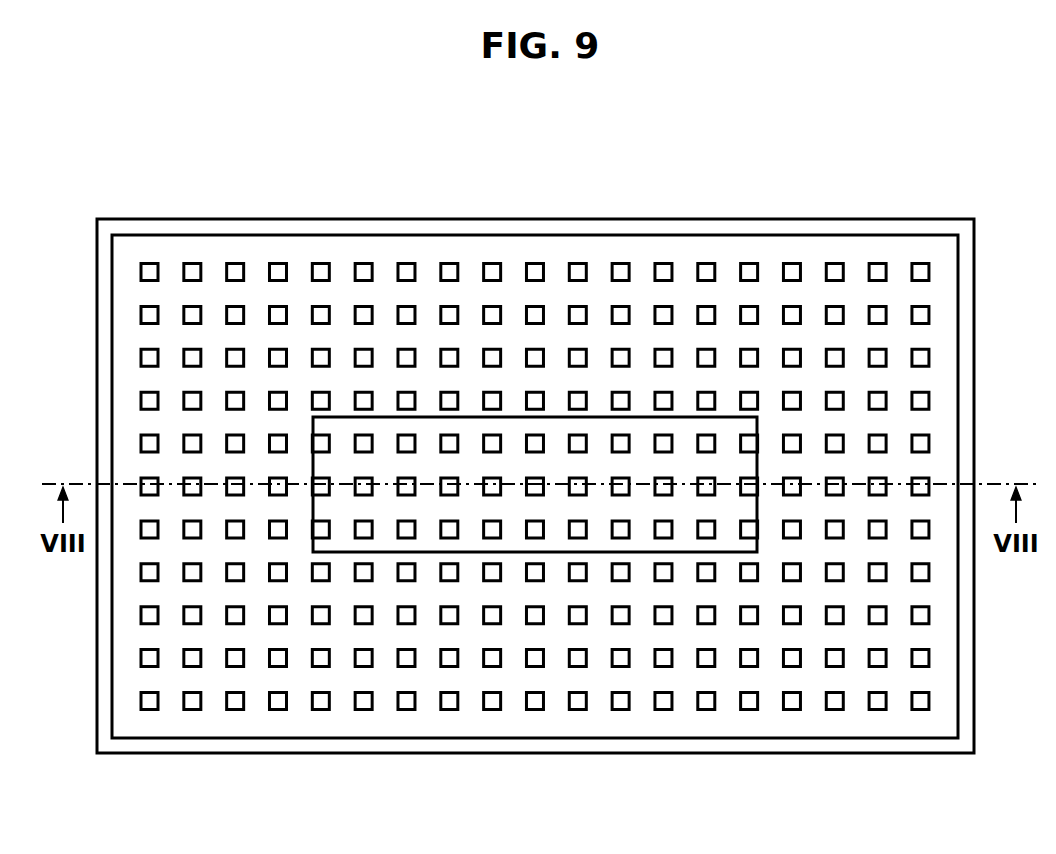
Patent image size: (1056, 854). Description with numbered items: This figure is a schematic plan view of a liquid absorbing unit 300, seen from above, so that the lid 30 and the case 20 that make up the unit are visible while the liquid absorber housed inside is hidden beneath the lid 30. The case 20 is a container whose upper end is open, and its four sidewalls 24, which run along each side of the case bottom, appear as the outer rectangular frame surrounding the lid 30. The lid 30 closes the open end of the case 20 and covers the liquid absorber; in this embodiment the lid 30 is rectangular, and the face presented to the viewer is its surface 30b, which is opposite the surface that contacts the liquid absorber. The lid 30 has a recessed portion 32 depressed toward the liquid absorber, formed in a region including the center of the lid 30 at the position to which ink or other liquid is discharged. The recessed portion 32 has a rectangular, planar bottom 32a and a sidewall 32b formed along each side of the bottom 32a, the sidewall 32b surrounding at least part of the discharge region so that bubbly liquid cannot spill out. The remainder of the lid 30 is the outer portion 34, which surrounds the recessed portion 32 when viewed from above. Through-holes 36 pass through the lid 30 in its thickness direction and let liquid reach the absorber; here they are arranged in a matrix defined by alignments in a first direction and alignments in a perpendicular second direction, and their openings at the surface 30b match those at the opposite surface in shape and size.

The liquid absorbing unit 300 is at (942, 171).
The case 20 is at (519, 227).
The sidewalls 24 is at (609, 227).
The lid 30 is at (688, 224).
The surface 30b is at (137, 293).
The recessed portion 32 is at (323, 160).
The bottom 32a is at (425, 470).
The sidewall 32b is at (316, 468).
The outer portion 34 is at (253, 305).
The through-holes 36 is at (192, 266).